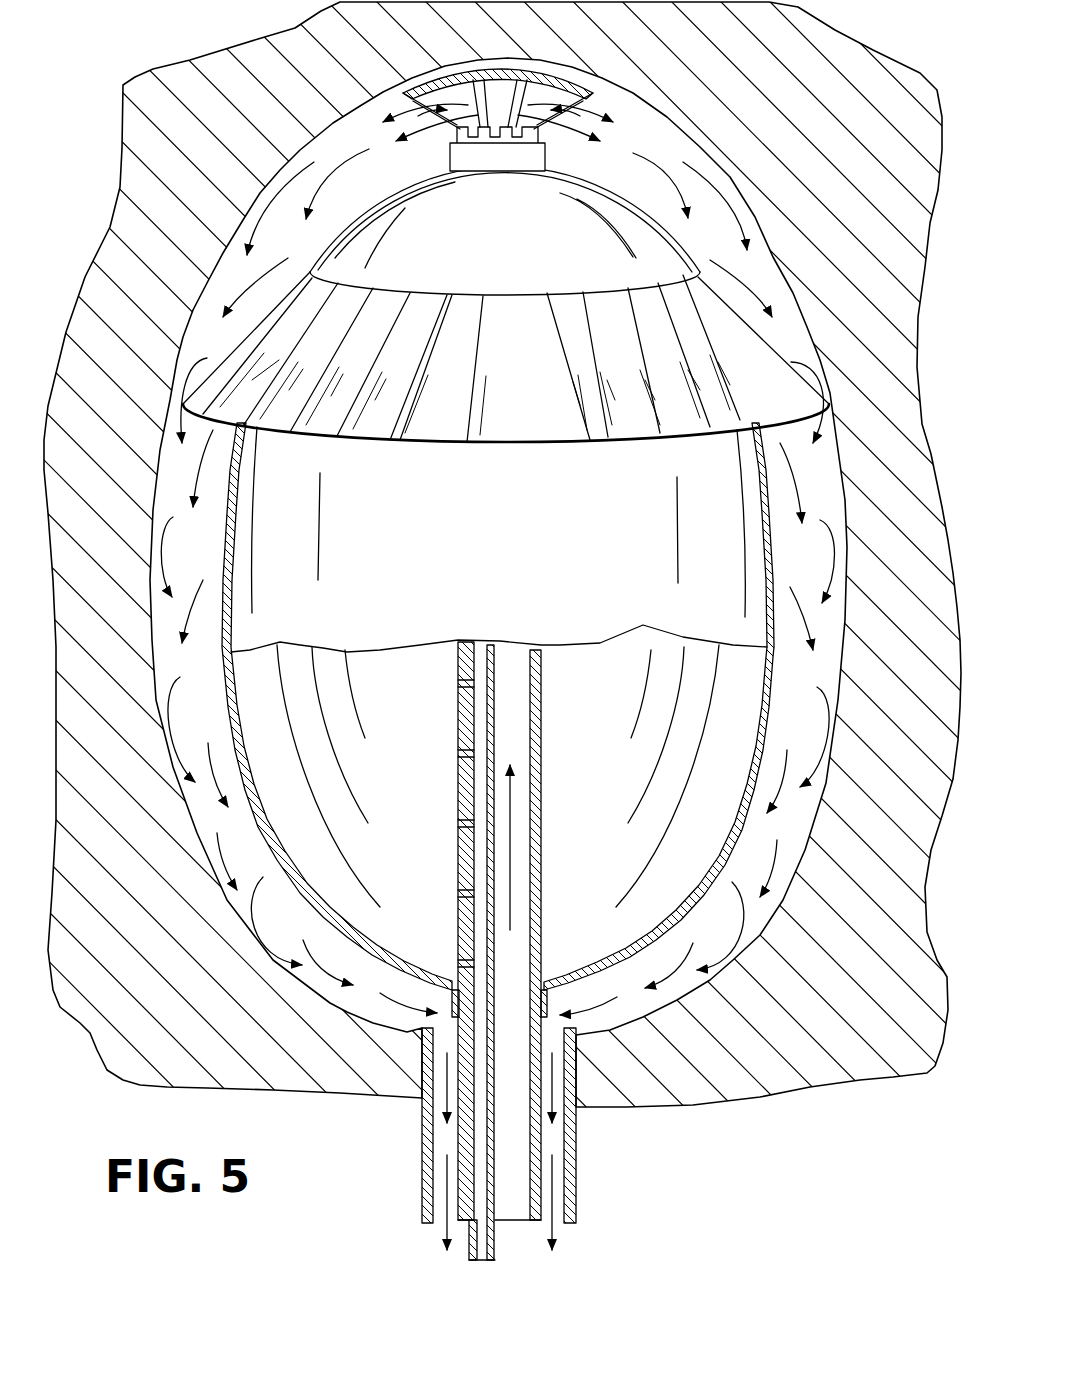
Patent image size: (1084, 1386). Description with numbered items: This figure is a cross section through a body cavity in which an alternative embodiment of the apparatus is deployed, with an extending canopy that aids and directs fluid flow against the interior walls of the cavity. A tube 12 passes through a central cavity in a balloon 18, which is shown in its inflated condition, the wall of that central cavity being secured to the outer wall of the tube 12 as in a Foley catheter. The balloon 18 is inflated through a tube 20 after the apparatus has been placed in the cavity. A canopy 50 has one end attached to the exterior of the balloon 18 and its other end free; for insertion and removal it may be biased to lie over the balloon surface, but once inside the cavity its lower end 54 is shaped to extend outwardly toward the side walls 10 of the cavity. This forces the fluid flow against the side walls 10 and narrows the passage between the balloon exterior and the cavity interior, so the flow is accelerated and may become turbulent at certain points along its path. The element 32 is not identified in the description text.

The side walls 10 is at (153, 651).
The tube 12 is at (544, 851).
The balloon 18 is at (777, 560).
The tube 20 is at (493, 693).
The dome cap 32 is at (470, 292).
The canopy 50 is at (495, 407).
The lower end 54 is at (427, 443).